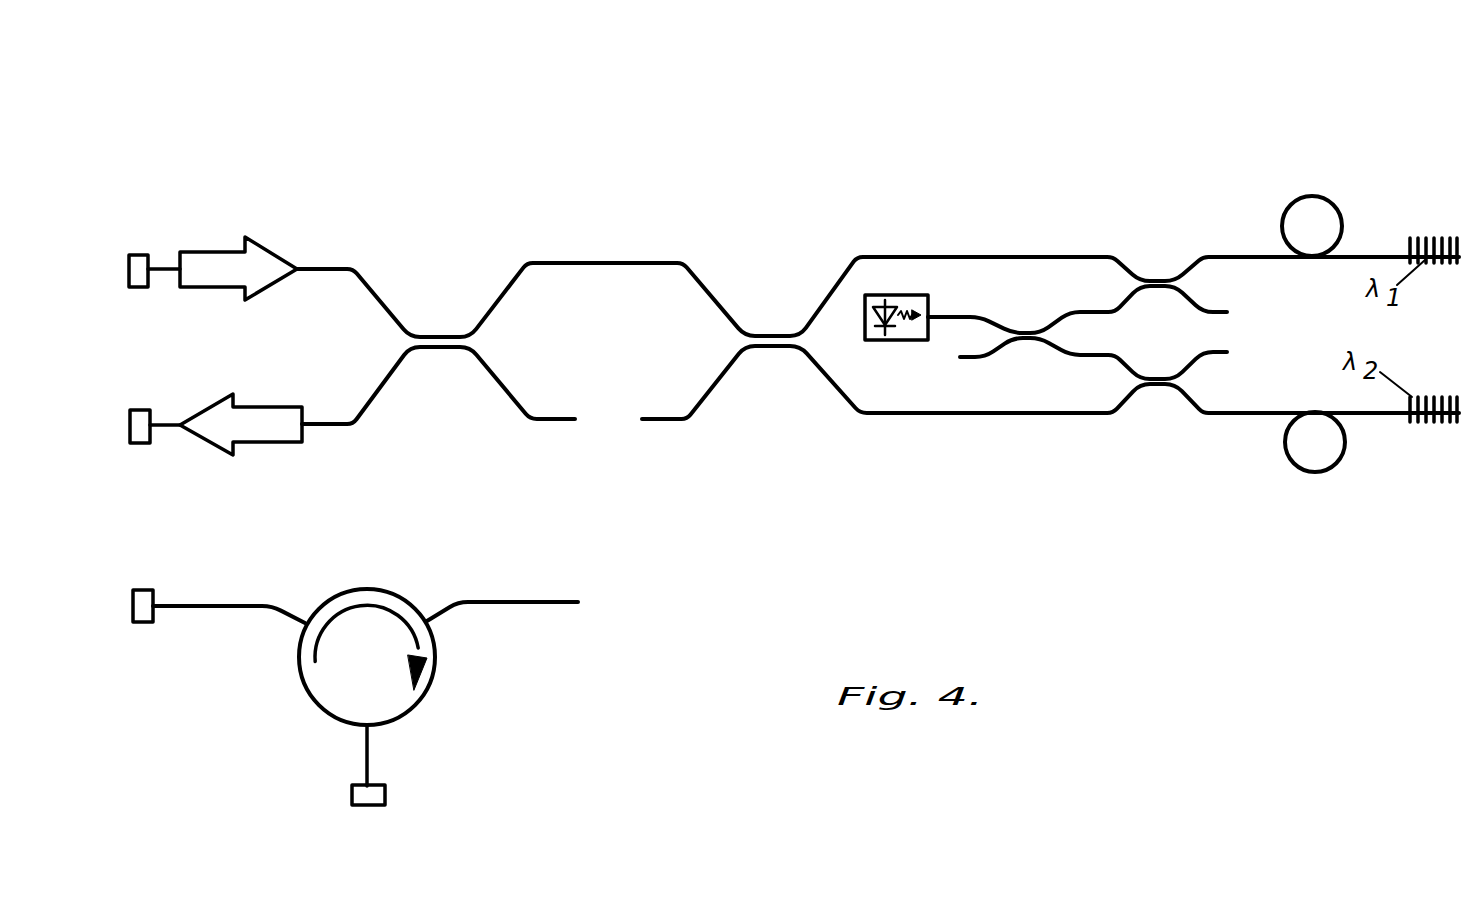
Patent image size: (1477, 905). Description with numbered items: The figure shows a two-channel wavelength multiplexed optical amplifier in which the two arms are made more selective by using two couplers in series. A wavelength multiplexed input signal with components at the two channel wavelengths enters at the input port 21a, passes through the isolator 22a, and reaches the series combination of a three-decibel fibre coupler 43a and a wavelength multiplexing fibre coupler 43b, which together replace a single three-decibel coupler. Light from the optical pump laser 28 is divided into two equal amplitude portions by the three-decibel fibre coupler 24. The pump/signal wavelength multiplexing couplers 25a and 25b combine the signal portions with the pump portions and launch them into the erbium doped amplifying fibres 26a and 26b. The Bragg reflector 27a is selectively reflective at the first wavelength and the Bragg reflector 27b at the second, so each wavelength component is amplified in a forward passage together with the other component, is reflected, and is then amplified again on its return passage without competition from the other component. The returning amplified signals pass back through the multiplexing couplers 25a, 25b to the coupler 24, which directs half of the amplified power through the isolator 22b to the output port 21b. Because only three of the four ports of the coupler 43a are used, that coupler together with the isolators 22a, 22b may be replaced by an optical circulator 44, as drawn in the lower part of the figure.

The input port 21a is at (142, 262).
The output port 21b is at (143, 427).
The isolator 22a is at (202, 263).
The isolator 22b is at (255, 427).
The 3 dB fibre coupler 43a is at (435, 320).
The wavelength multiplexing fibre coupler 43b is at (768, 322).
The optical pump laser 28 is at (912, 303).
The 3 dB fibre coupler 24 is at (1022, 347).
The wavelength multiplexing fibre coupler 25a is at (1148, 267).
The wavelength multiplexing fibre coupler 25b is at (1160, 393).
The erbium doped optically amplifying fibre 26a is at (1290, 200).
The erbium doped optically amplifying fibre 26b is at (1305, 470).
The Bragg reflector 27a is at (1438, 240).
The Bragg reflector 27b is at (1438, 423).
The optical circulator 44 is at (348, 685).